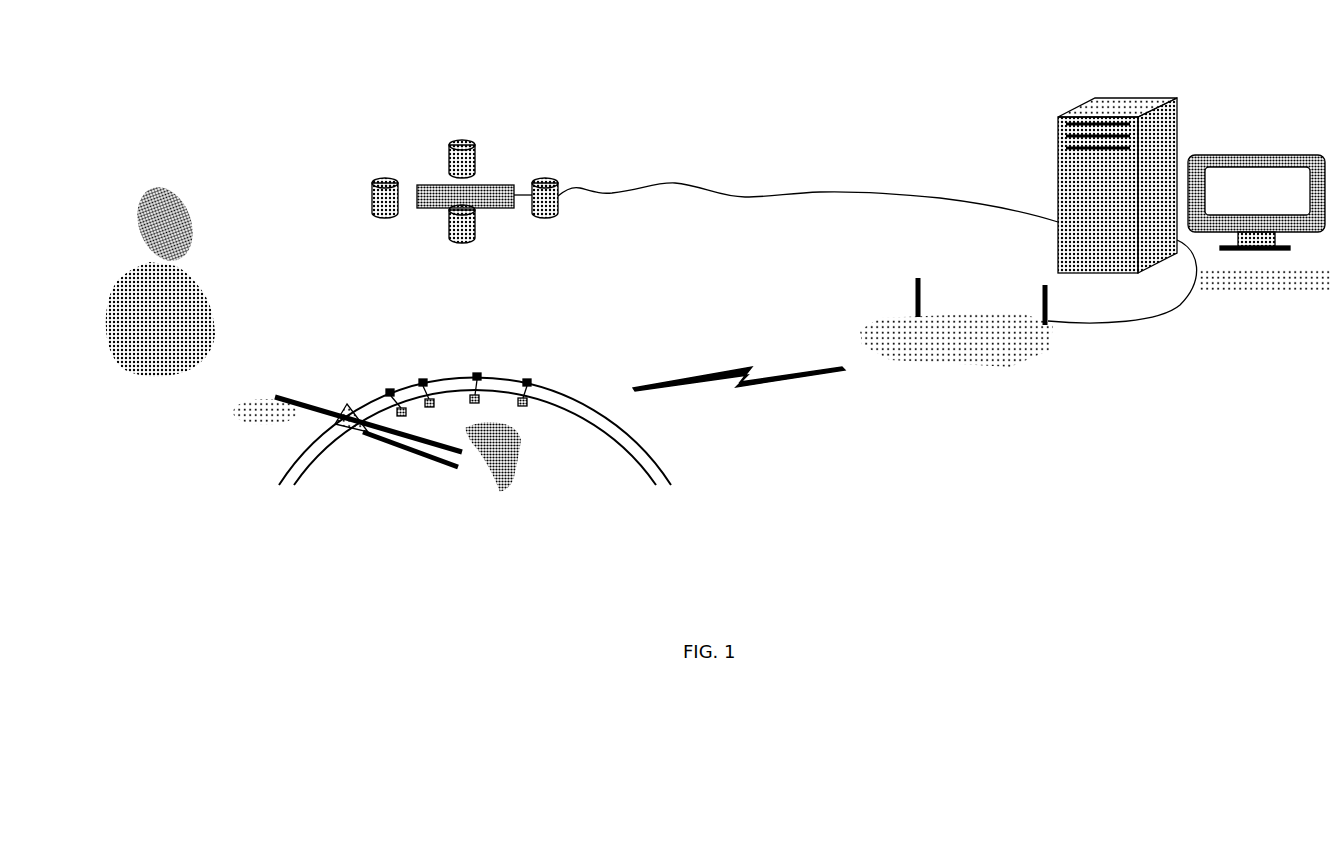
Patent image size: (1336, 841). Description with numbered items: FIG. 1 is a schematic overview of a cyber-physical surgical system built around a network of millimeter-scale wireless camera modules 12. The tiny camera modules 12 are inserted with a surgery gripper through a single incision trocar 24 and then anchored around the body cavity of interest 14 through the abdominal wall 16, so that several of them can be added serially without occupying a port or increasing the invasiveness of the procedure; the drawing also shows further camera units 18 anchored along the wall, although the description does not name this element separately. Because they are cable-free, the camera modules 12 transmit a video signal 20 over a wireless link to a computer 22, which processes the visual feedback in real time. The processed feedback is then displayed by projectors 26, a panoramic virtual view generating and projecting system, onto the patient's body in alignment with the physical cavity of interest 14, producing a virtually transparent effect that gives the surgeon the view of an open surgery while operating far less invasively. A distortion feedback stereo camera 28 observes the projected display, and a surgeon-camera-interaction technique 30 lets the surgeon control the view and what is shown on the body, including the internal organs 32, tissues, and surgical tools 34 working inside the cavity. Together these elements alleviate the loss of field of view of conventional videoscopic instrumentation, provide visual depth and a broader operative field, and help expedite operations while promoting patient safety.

The wireless camera modules 12 is at (529, 413).
The body cavity of interest 14 is at (612, 474).
The abdominal wall 16 is at (639, 438).
The outer sensors 18 is at (486, 376).
The video signal 20 is at (792, 377).
The computer 22 is at (1222, 104).
The trocar 24 is at (345, 406).
The projectors 26 is at (482, 152).
The distortion feedback stereo camera 28 is at (435, 176).
The surgeon-camera-interaction technique 30 is at (185, 220).
The internal organs 32 is at (500, 488).
The surgical tools 34 is at (383, 446).